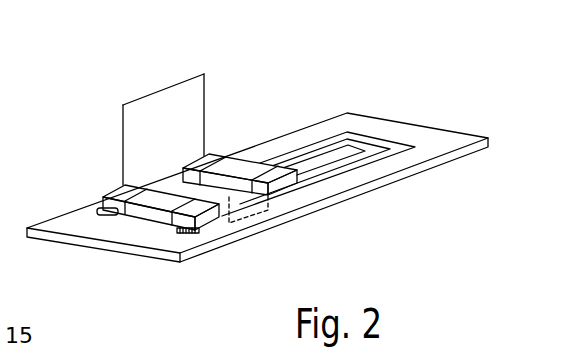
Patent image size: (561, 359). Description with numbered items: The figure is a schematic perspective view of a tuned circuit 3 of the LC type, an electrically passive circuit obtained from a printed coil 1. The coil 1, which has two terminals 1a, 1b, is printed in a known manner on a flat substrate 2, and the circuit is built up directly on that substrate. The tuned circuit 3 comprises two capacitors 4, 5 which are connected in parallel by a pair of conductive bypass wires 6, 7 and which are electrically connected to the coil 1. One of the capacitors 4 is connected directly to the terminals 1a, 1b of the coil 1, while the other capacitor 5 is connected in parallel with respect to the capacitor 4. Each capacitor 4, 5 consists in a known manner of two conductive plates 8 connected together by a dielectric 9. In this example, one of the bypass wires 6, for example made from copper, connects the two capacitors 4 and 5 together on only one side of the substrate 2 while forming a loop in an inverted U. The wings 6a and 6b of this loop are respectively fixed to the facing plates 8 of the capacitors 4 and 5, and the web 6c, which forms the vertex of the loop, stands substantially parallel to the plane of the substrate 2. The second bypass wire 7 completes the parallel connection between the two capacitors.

The coil 1 is at (393, 138).
The terminal 1a is at (98, 210).
The terminal 1b is at (202, 229).
The substrate 2 is at (97, 250).
The tuned circuit 3 is at (286, 254).
The capacitor 4 is at (101, 180).
The capacitor 5 is at (228, 144).
The bypass wire 6 is at (195, 52).
The wing 6a is at (123, 128).
The wing 6b is at (205, 105).
The web 6c is at (155, 92).
The bypass wire 7 is at (218, 215).
The conductive plate 8 is at (130, 187).
The dielectric 9 is at (248, 162).